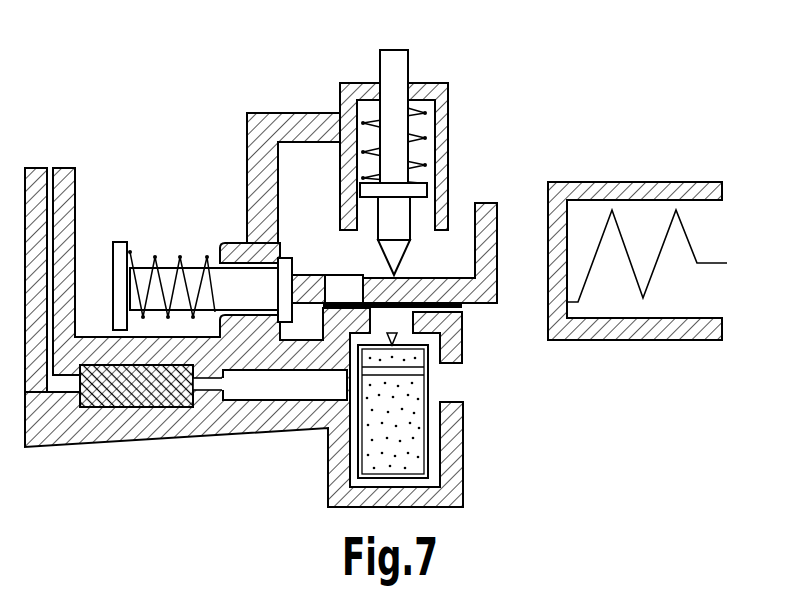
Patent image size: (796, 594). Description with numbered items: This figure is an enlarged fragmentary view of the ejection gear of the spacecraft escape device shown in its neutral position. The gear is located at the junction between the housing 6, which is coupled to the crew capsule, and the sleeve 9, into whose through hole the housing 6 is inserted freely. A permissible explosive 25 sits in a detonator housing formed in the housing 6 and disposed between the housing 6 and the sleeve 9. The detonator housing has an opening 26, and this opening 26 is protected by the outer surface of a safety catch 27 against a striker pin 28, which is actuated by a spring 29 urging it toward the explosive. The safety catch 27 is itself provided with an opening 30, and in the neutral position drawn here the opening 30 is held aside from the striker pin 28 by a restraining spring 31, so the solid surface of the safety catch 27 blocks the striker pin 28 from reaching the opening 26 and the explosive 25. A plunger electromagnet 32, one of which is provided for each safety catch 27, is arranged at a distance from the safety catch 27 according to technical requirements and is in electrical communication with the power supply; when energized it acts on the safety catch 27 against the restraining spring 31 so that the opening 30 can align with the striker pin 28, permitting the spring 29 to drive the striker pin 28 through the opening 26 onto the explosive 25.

The housing 6 is at (78, 202).
The sleeve 9 is at (47, 432).
The permissible explosive 25 is at (410, 432).
The opening 26 is at (397, 320).
The safety catch 27 is at (488, 203).
The striker pin 28 is at (400, 62).
The spring 29 is at (430, 137).
The opening 30 is at (343, 287).
The restraining spring 31 is at (157, 257).
The plunger electromagnet 32 is at (630, 190).